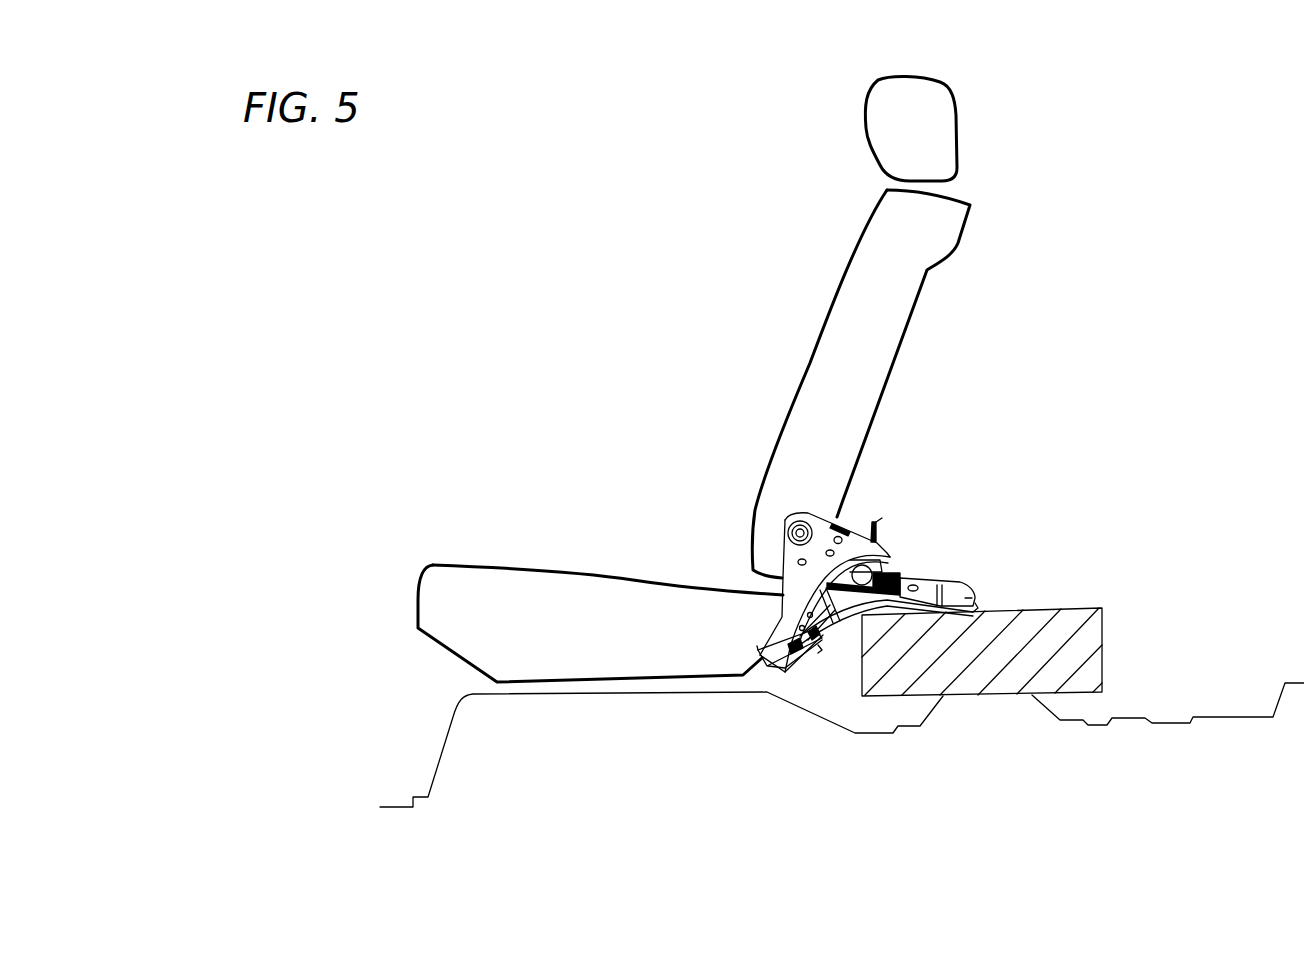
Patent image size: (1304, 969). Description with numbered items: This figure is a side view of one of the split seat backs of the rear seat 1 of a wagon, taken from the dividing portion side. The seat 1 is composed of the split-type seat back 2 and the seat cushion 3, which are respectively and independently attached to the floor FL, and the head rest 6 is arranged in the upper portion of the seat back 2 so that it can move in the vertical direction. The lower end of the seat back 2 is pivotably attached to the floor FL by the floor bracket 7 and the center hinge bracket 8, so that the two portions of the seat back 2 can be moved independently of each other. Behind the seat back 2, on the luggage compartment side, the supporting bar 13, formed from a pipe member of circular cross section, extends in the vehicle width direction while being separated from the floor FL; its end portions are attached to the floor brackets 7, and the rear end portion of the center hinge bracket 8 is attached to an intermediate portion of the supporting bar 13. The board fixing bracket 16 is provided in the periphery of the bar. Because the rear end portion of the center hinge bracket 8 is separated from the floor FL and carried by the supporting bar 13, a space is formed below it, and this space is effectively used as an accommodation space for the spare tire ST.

The seat 1 is at (718, 410).
The seat back 2 is at (810, 370).
The seat cushion 3 is at (634, 582).
The head rest 6 is at (958, 142).
The floor bracket 7 is at (957, 588).
The center hinge bracket 8 is at (778, 582).
The supporting bar 13 is at (888, 563).
The board fixing bracket 16 is at (876, 520).
The spare tire ST is at (1045, 608).
The floor FL is at (803, 708).